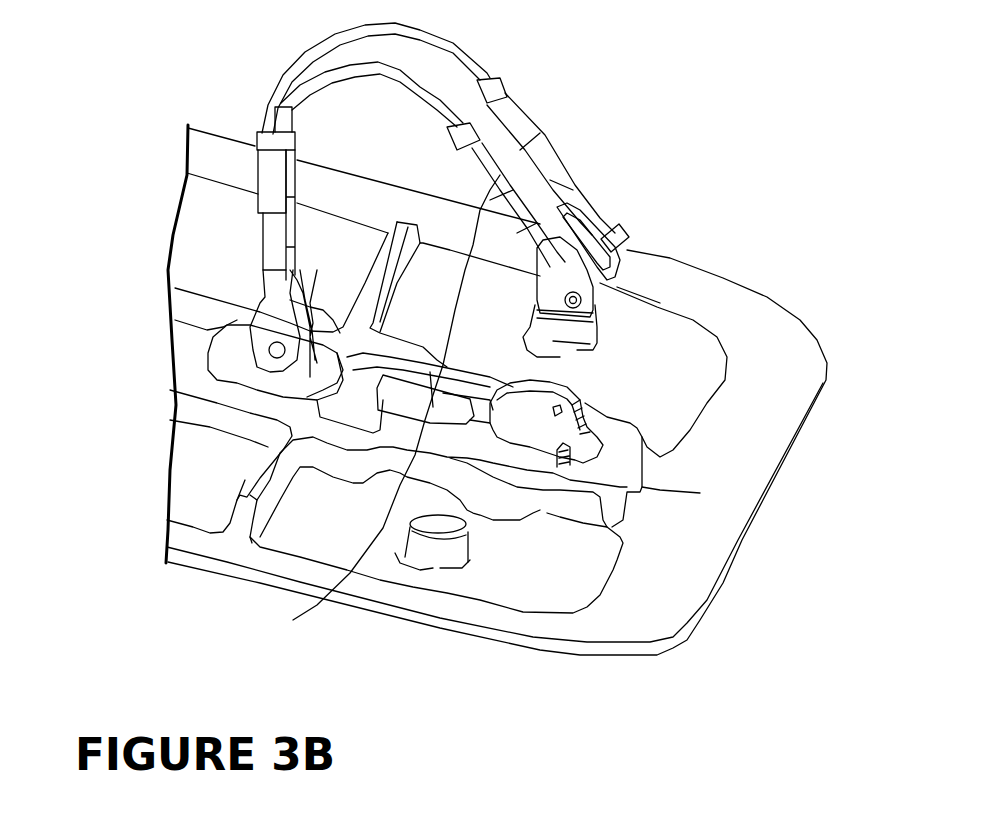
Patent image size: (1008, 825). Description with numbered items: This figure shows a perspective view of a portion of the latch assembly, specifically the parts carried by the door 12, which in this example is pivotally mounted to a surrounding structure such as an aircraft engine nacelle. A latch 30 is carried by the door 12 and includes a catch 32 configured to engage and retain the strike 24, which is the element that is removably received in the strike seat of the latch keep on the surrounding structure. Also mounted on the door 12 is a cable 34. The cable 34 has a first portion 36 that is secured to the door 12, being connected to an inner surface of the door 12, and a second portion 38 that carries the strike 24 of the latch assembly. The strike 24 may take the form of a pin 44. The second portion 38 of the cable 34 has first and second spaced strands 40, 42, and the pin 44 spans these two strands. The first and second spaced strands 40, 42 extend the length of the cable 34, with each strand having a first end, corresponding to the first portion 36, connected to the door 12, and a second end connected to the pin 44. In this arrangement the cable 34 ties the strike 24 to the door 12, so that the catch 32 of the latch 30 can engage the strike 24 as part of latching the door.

The door 12 is at (497, 482).
The strike 24 is at (598, 286).
The latch 30 is at (580, 398).
The catch 32 is at (700, 493).
The cable 34 is at (253, 233).
The first portion 36 is at (253, 338).
The second portion 38 is at (617, 225).
The first spaced strand 40 is at (375, 411).
The second spaced strand 42 is at (550, 182).
The pin 44 is at (628, 240).